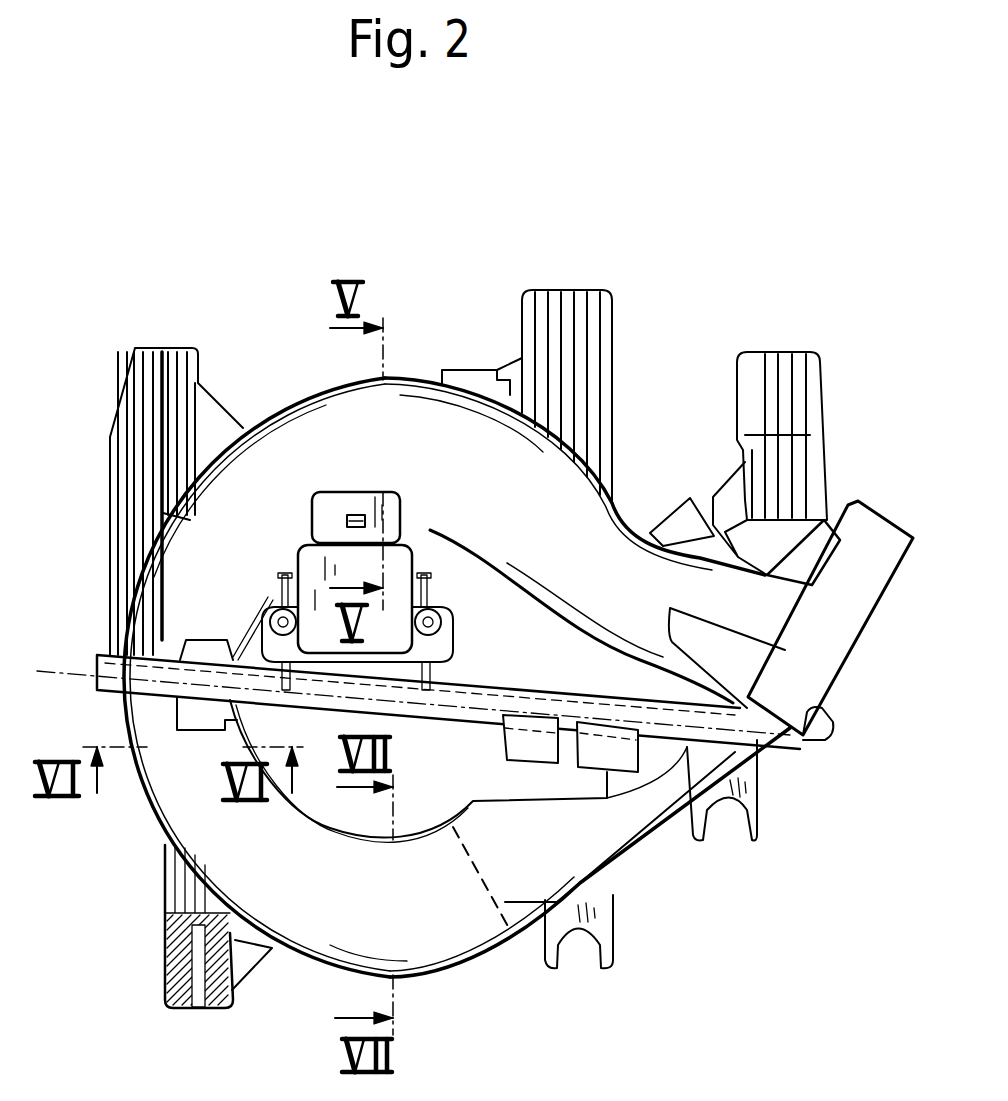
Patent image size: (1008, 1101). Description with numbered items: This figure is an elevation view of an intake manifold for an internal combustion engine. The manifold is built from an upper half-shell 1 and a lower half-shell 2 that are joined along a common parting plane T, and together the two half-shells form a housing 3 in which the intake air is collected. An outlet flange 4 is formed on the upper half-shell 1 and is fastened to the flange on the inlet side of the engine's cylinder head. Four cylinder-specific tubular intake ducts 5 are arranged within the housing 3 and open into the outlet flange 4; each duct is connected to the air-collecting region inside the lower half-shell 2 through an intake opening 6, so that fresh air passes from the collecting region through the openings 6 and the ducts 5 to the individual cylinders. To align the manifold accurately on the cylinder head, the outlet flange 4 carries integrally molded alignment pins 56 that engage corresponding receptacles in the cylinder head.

The upper half-shell 1 is at (277, 438).
The lower half-shell 2 is at (632, 827).
The housing 3 is at (657, 443).
The outlet flange 4 is at (862, 532).
The tubular intake ducts 5 is at (413, 403).
The intake opening 6 is at (507, 930).
The alignment pins 56 is at (828, 728).
The parting plane T is at (62, 673).